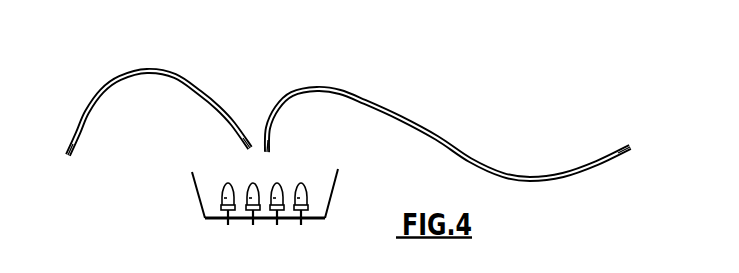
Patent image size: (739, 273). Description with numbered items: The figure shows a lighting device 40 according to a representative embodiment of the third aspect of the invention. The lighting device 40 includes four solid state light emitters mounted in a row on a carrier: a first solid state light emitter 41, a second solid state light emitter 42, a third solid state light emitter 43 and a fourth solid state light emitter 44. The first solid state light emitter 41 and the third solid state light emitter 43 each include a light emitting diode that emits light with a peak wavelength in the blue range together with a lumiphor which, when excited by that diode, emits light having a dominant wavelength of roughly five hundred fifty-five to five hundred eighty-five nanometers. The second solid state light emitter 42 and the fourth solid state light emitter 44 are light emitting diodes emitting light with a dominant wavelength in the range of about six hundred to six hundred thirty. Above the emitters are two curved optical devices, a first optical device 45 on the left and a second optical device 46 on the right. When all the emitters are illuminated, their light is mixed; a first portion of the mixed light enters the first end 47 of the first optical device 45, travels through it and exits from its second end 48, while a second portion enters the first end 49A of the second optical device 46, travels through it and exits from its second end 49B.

The lighting device 40 is at (448, 97).
The first solid state light emitter 41 is at (260, 213).
The second solid state light emitter 42 is at (247, 212).
The third solid state light emitter 43 is at (282, 214).
The fourth solid state light emitter 44 is at (302, 199).
The first optical device 45 is at (152, 70).
The second optical device 46 is at (441, 133).
The first end of the first optical device 47 is at (247, 146).
The second end of the first optical device 48 is at (75, 138).
The first end of the second optical device 49A is at (272, 141).
The second end of the second optical device 49B is at (618, 147).